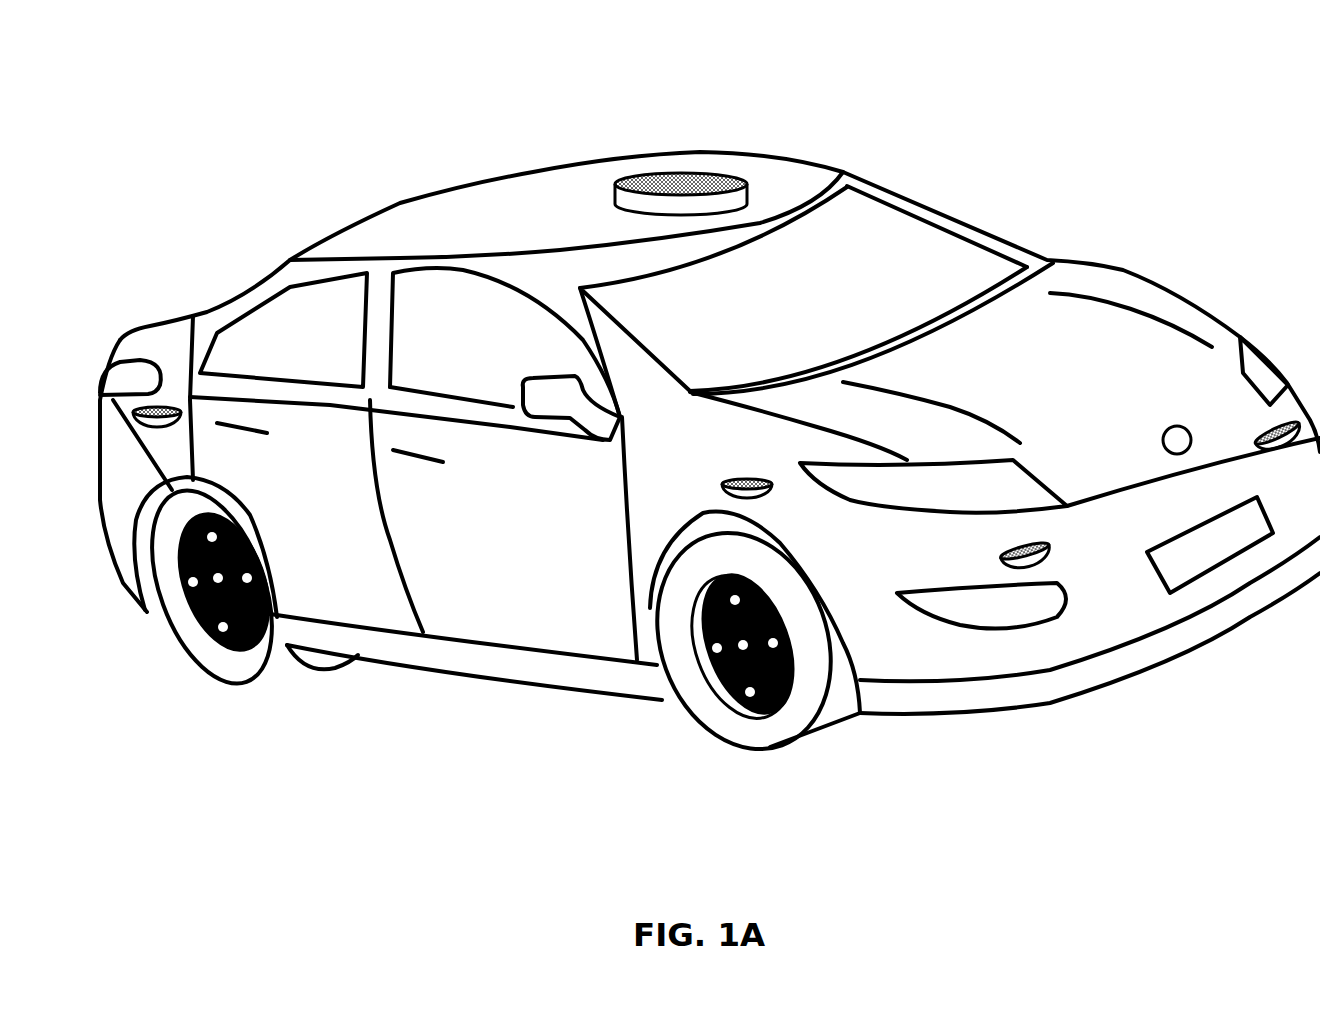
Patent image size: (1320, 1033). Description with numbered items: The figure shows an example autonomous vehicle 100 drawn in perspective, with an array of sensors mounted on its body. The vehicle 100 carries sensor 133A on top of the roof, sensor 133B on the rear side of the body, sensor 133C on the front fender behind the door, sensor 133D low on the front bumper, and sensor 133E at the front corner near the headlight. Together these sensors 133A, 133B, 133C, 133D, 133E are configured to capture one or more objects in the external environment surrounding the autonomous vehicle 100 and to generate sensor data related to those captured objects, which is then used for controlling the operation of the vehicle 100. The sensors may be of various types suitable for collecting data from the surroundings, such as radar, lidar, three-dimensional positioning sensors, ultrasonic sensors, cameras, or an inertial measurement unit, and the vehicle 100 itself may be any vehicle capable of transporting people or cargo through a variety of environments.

The autonomous vehicle 100 is at (1106, 95).
The sensor 133A is at (697, 170).
The sensor 133B is at (178, 408).
The sensor 133C is at (748, 481).
The sensor 133D is at (1008, 551).
The sensor 133E is at (1262, 444).